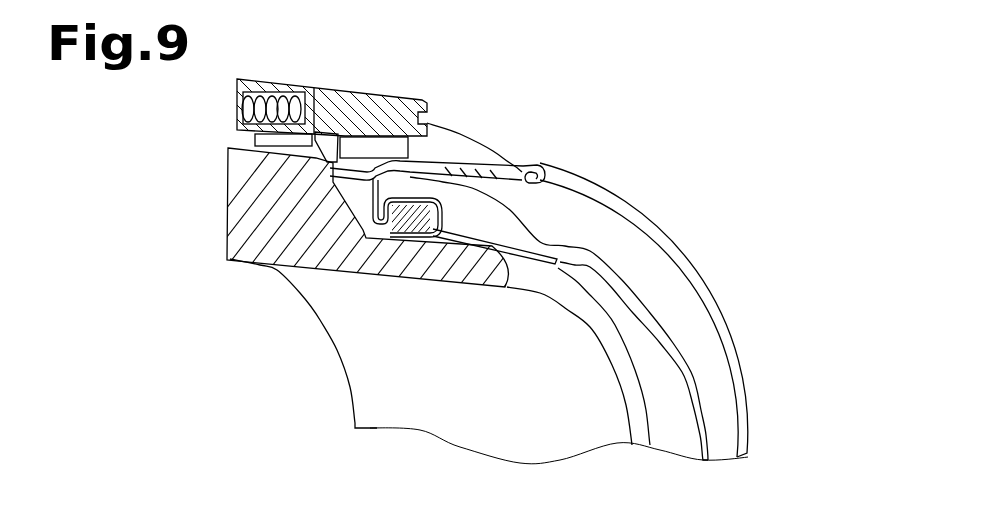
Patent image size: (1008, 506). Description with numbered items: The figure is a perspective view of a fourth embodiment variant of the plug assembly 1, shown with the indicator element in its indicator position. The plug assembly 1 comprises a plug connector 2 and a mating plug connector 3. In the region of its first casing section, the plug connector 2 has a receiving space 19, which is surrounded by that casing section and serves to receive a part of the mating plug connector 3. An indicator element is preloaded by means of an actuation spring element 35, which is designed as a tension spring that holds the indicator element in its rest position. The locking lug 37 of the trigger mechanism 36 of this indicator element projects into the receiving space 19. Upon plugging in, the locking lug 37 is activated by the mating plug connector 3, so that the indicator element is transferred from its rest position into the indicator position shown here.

The plug assembly 1 is at (786, 140).
The plug connector 2 is at (516, 140).
The mating plug connector 3 is at (247, 178).
The receiving space 19 is at (370, 230).
The actuation spring element 35 is at (240, 103).
The trigger mechanism 36 is at (314, 167).
The locking lug 37 is at (337, 172).